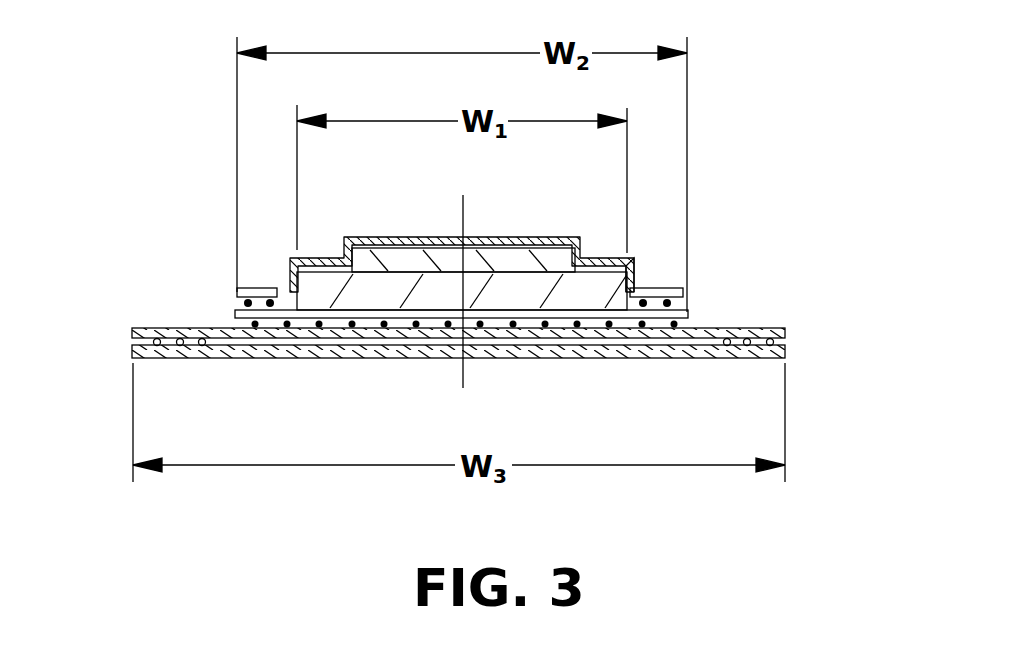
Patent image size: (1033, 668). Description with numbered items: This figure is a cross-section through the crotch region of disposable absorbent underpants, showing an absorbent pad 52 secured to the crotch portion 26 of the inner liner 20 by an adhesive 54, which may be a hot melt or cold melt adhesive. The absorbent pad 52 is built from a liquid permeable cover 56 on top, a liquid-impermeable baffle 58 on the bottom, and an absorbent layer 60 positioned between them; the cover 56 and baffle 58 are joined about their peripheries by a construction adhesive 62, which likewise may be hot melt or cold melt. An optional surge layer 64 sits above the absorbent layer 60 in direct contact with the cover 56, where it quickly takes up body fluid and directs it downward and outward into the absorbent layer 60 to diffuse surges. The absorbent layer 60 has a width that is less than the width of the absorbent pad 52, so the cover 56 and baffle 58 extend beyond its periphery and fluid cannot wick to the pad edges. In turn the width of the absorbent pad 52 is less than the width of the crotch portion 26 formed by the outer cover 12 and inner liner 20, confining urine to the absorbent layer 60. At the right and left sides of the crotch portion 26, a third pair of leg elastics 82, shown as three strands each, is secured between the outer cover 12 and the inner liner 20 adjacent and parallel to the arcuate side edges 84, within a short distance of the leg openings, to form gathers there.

The outer cover 12 is at (787, 357).
The inner liner 20 is at (475, 339).
The crotch portion 26 is at (497, 263).
The absorbent pad 52 is at (360, 232).
The adhesive 54 is at (348, 327).
The liquid permeable cover 56 is at (535, 237).
The liquid-impermeable baffle 58 is at (690, 312).
The absorbent layer 60 is at (640, 280).
The construction adhesive 62 is at (270, 298).
The surge layer 64 is at (398, 238).
The third pair of leg elastics 82 is at (202, 338).
The arcuate side edges 84 is at (130, 332).